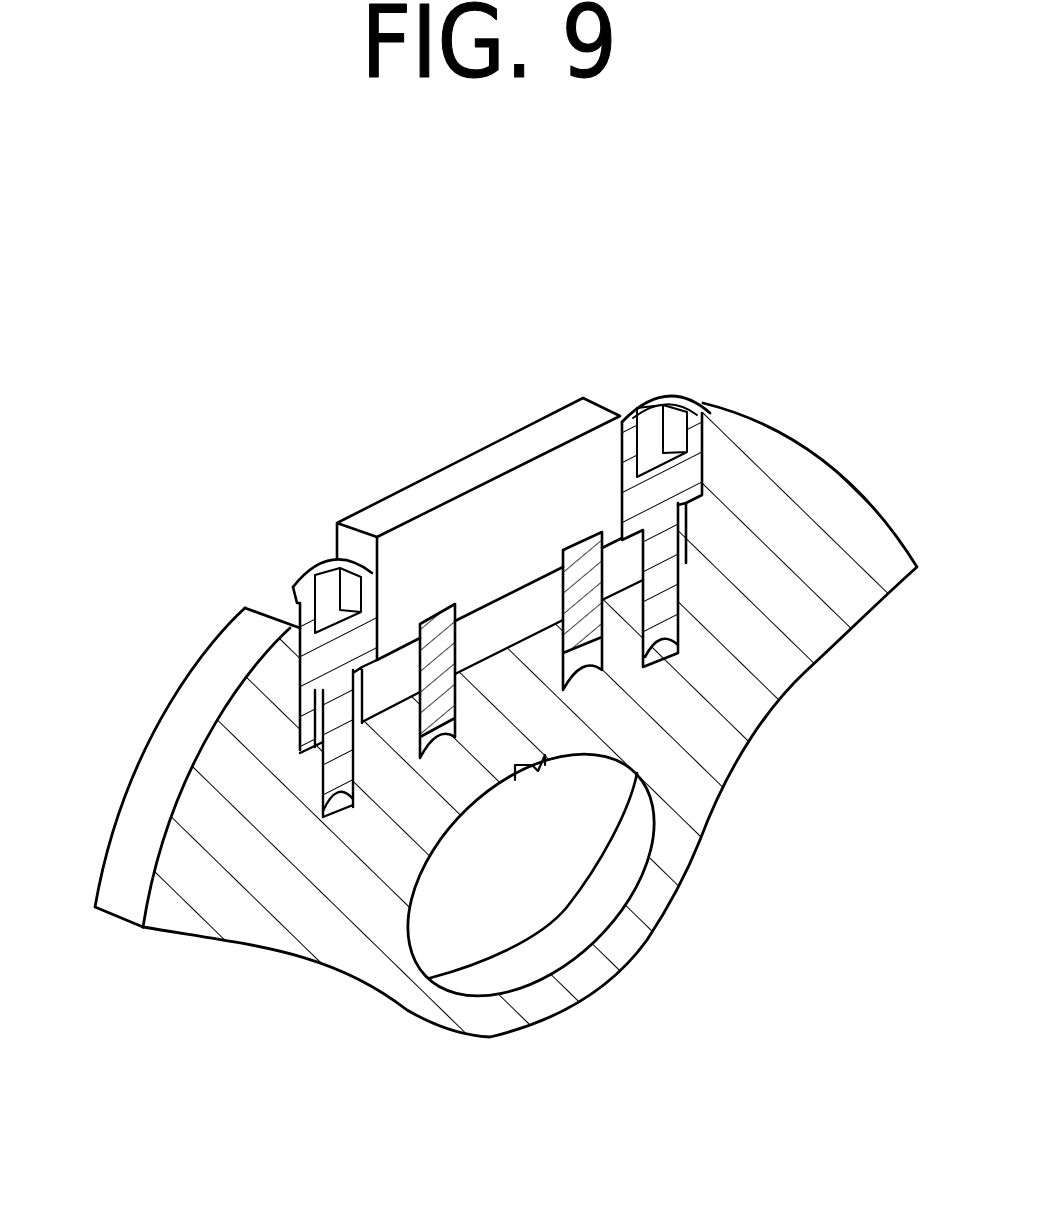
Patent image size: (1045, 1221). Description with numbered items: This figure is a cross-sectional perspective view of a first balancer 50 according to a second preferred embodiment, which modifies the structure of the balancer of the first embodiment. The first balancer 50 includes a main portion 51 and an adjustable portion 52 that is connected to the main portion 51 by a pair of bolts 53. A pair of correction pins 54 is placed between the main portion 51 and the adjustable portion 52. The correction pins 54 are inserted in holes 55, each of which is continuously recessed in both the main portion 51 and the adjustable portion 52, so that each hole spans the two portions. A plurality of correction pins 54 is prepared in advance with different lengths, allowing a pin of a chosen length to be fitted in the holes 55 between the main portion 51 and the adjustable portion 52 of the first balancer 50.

The first balancer 50 is at (750, 386).
The main portion 51 is at (840, 522).
The adjustable portion 52 is at (500, 463).
The bolts 53 is at (627, 415).
The correction pins 54 is at (590, 531).
The holes 55 is at (583, 667).